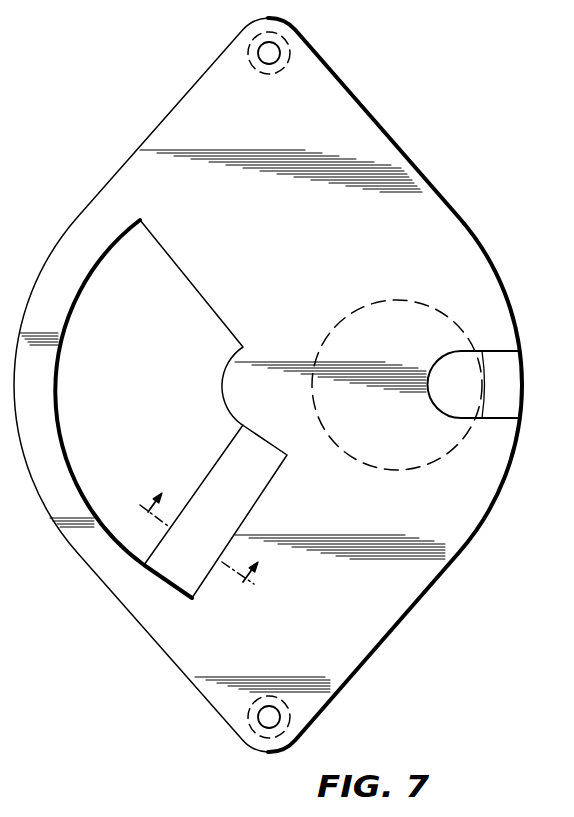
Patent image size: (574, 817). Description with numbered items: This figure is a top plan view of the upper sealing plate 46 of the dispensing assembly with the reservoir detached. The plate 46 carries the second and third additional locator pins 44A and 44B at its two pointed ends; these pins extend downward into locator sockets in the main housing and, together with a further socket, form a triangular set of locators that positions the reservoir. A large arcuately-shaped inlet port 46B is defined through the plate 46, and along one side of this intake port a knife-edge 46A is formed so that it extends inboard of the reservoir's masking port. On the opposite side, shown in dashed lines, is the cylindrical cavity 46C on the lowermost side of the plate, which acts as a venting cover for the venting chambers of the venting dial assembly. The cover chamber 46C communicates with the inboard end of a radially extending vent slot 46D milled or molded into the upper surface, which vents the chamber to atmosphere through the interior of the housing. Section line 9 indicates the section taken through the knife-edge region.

The upper sealing plate 46 is at (319, 256).
The knife-edge 46A is at (242, 510).
The inlet port 46B is at (55, 373).
The cylindrical cavity 46C is at (390, 300).
The vent slot 46D is at (508, 441).
The locator pin 44A is at (252, 727).
The locator pin 44B is at (293, 53).
The section line 9- 9 is at (195, 550).